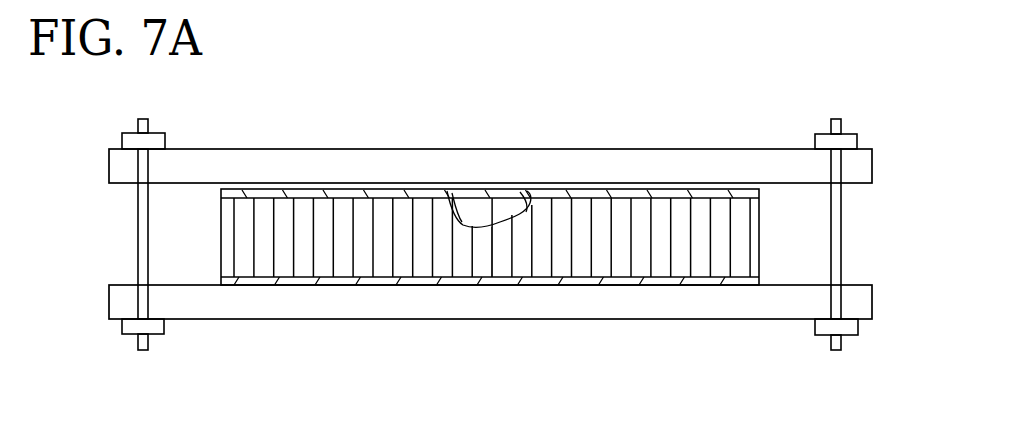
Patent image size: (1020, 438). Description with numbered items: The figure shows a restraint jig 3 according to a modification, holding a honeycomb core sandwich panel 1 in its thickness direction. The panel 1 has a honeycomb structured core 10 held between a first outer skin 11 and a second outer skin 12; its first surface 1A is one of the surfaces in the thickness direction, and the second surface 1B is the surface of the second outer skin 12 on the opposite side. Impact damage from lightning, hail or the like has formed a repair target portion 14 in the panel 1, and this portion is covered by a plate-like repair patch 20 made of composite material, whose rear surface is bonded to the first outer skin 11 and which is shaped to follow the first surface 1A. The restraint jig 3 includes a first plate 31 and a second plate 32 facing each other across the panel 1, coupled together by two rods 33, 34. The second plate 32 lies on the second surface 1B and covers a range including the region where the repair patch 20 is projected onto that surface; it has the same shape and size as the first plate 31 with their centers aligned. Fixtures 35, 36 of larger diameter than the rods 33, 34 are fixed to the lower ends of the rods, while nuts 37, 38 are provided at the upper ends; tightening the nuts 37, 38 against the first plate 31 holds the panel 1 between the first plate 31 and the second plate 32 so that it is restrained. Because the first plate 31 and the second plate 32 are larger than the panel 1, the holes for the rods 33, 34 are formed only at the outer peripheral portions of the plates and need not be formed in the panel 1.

The honeycomb core sandwich panel 1 is at (259, 184).
The first surface 1A is at (642, 190).
The second surface 1B is at (645, 280).
The restraint jig 3 is at (866, 120).
The honeycomb structured core 10 is at (762, 233).
The first outer skin 11 is at (696, 190).
The second outer skin 12 is at (720, 280).
The repair target portion 14 is at (518, 193).
The repair patch 20 is at (448, 196).
The first plate 31 is at (592, 149).
The second plate 32 is at (562, 320).
The rod 33 is at (137, 247).
The rod 34 is at (843, 233).
The fixture 35 is at (132, 340).
The fixture 36 is at (822, 337).
The nut 37 is at (122, 143).
The nut 38 is at (810, 139).